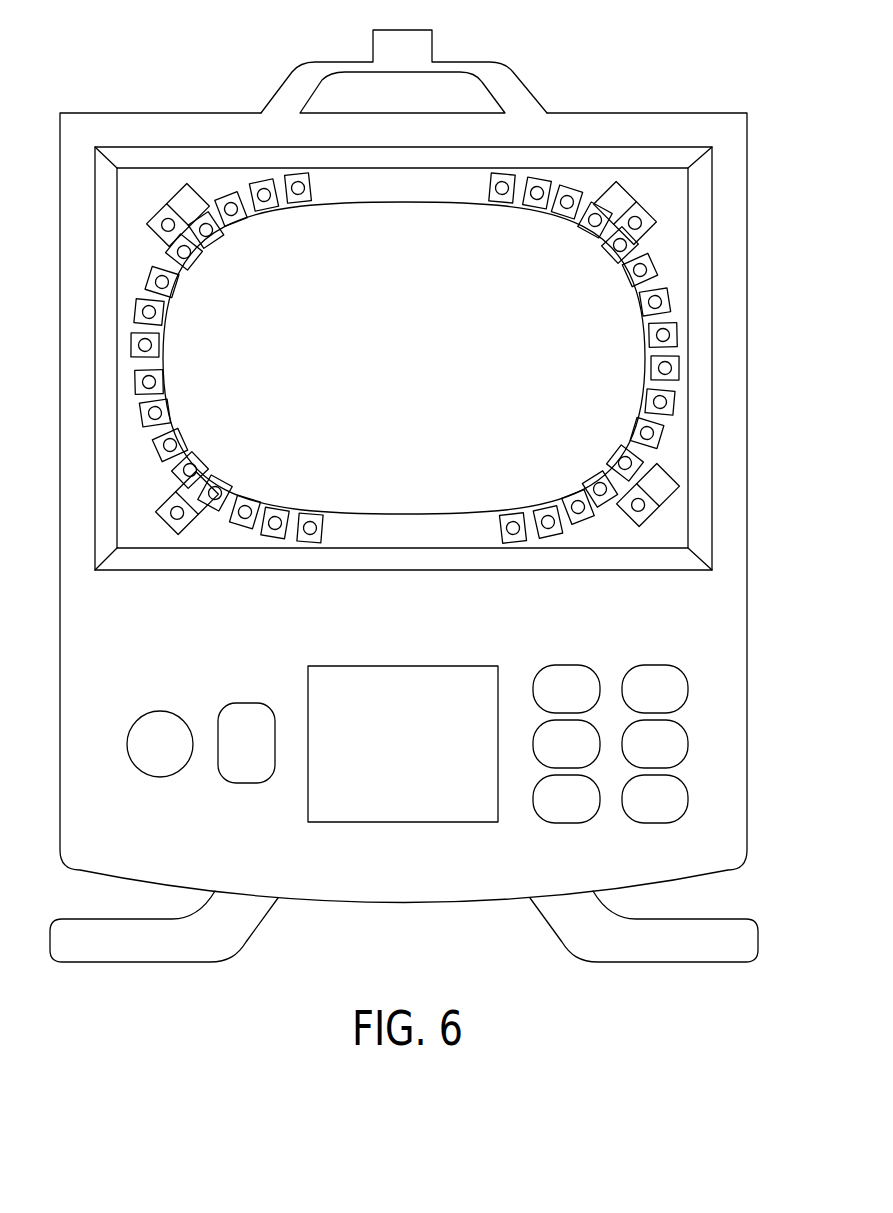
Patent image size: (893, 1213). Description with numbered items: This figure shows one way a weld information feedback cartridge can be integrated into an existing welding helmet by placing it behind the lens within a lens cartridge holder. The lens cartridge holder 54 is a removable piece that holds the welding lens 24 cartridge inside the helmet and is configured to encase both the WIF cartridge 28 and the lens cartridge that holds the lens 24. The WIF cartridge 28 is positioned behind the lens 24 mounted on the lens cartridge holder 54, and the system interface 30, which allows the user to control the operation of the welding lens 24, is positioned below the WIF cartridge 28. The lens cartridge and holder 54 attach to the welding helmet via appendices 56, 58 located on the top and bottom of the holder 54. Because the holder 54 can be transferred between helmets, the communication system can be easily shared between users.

The welding lens 24 is at (563, 302).
The WIF cartridge 28 is at (657, 180).
The system interface 30 is at (722, 707).
The lens cartridge holder 54 is at (622, 125).
The appendix 56 is at (465, 67).
The appendix 58 is at (225, 945).